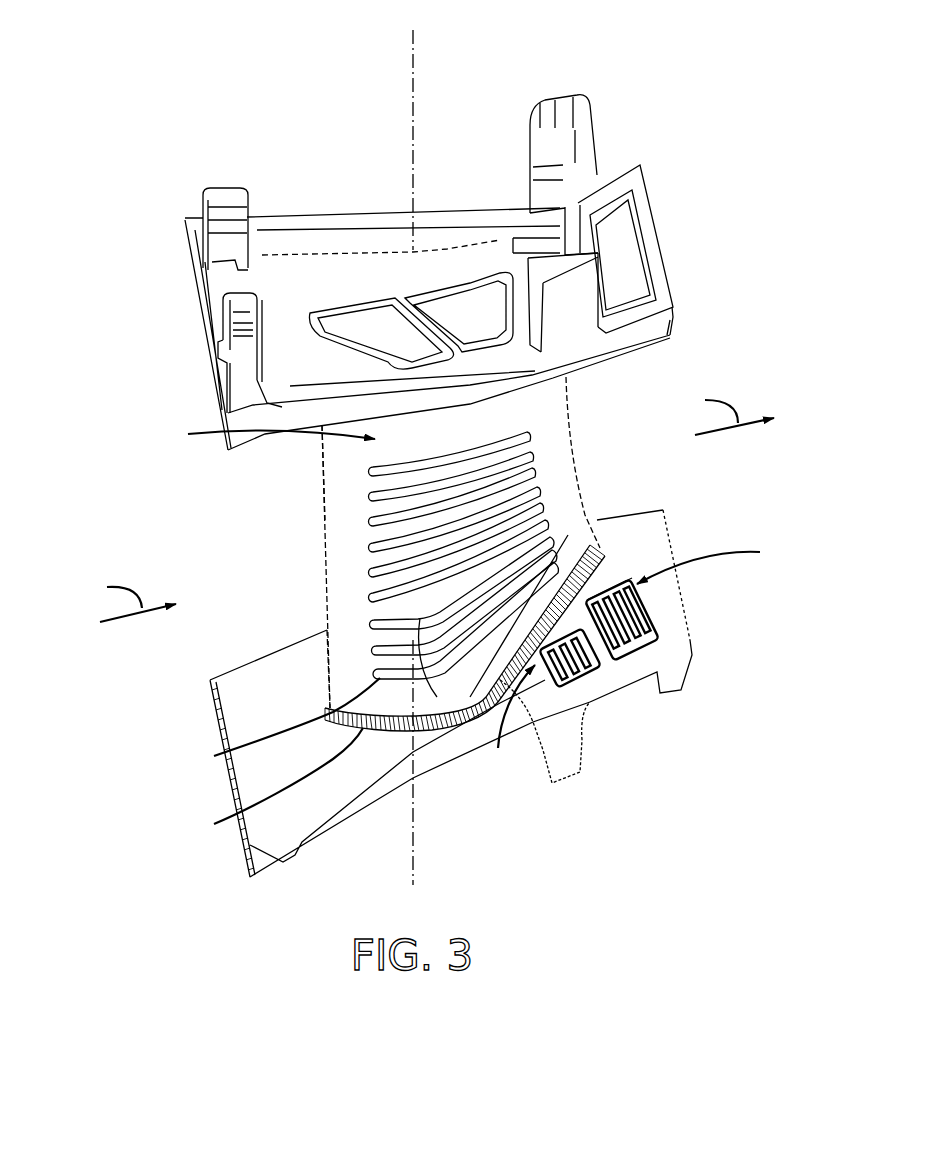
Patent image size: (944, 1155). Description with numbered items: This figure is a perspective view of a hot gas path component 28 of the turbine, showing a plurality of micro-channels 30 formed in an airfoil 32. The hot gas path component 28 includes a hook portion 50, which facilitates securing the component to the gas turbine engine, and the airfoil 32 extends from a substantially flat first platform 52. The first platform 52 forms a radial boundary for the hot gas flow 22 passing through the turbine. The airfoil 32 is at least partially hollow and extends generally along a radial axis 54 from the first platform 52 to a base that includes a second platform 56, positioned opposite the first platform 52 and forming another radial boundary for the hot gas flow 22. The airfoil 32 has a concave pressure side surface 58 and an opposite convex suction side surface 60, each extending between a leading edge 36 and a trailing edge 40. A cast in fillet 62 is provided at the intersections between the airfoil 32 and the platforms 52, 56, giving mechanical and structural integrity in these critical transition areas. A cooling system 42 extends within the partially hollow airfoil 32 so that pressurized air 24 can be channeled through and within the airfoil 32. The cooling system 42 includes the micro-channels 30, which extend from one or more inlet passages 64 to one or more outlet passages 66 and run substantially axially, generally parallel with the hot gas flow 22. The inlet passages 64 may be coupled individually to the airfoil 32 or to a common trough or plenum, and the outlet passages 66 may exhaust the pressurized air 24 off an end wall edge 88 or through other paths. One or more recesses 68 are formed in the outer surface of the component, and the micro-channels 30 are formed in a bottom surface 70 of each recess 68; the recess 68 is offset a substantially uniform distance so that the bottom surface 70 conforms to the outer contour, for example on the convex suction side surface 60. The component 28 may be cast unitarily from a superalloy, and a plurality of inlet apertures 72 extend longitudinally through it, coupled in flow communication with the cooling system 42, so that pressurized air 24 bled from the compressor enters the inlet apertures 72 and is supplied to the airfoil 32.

The hot gas flow 22 is at (423, 506).
The pressurized air 24 is at (482, 452).
The hot gas path component 28 is at (601, 80).
The micro-channels 30 is at (652, 625).
The airfoil 32 is at (326, 681).
The leading edge 36 is at (327, 566).
The trailing edge 40 is at (605, 515).
The cooling system 42 is at (315, 472).
The hook portion 50 is at (657, 195).
The first platform 52 is at (672, 323).
The radial axis 54 is at (413, 65).
The second platform 56 is at (663, 600).
The concave pressure side surface 58 is at (330, 617).
The convex suction side surface 60 is at (578, 522).
The cast in fillet 62 is at (270, 783).
The inlet passages 64 is at (279, 727).
The outlet passages 66 is at (645, 575).
The recesses 68 is at (473, 603).
The bottom surface 70 is at (535, 408).
The inlet apertures 72 is at (368, 290).
The end wall edge 88 is at (678, 668).